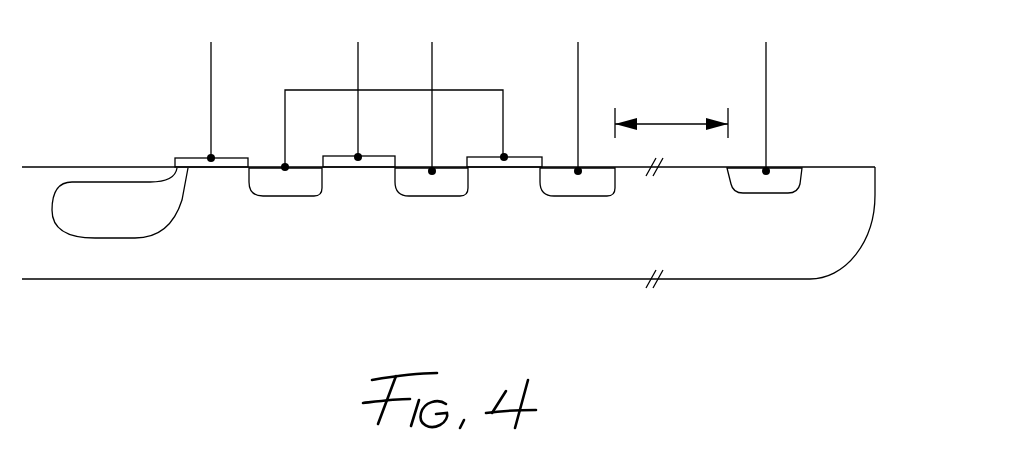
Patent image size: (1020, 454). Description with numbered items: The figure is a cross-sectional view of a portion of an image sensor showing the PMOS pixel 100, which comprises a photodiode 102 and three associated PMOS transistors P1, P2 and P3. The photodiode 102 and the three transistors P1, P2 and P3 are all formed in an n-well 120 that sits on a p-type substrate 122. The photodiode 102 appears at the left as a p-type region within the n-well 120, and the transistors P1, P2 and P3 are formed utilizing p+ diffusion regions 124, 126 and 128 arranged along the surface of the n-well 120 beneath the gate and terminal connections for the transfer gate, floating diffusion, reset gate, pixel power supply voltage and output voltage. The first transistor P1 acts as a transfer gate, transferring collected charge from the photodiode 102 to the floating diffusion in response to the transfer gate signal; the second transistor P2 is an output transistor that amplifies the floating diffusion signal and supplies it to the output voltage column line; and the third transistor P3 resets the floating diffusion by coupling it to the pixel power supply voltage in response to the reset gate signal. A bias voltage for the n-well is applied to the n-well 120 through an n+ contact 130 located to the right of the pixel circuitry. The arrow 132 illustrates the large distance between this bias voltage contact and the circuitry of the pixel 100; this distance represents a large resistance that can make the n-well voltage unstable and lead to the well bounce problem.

The pixel 100 is at (141, 89).
The photodiode 102 is at (147, 240).
The n-well 120 is at (531, 272).
The p-type substrate 122 is at (526, 316).
The p+ diffusion region 124 is at (300, 197).
The p+ diffusion region 126 is at (450, 197).
The p+ diffusion region 128 is at (605, 197).
The n+ contact 130 is at (777, 194).
The arrow 132 is at (677, 127).
The first transistor P1 is at (219, 193).
The second transistor P2 is at (504, 191).
The third transistor P3 is at (361, 191).